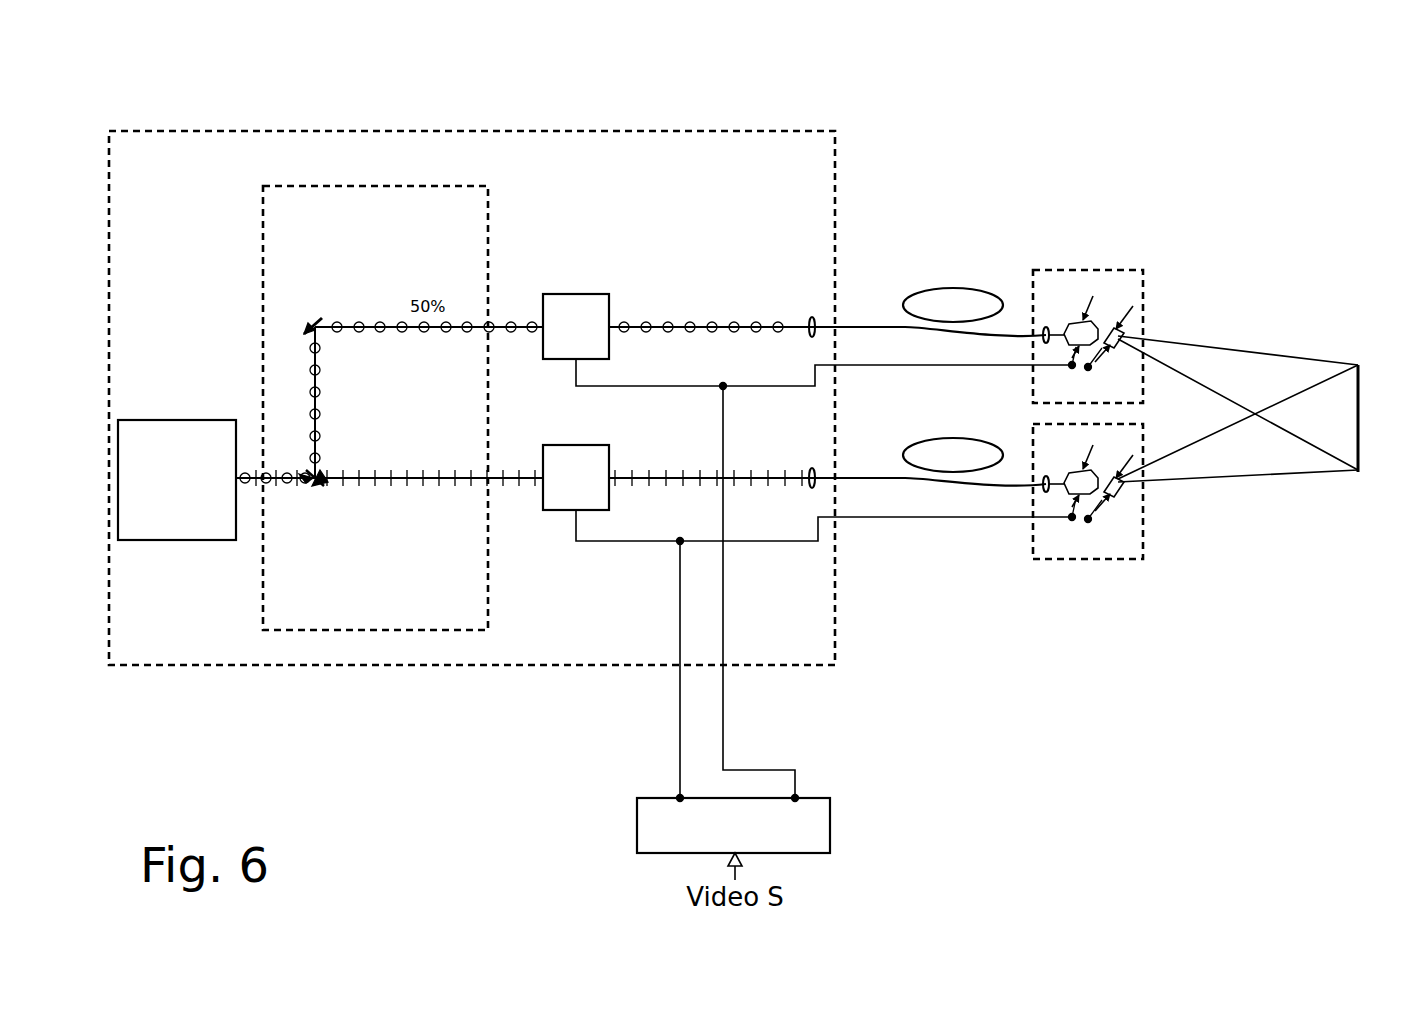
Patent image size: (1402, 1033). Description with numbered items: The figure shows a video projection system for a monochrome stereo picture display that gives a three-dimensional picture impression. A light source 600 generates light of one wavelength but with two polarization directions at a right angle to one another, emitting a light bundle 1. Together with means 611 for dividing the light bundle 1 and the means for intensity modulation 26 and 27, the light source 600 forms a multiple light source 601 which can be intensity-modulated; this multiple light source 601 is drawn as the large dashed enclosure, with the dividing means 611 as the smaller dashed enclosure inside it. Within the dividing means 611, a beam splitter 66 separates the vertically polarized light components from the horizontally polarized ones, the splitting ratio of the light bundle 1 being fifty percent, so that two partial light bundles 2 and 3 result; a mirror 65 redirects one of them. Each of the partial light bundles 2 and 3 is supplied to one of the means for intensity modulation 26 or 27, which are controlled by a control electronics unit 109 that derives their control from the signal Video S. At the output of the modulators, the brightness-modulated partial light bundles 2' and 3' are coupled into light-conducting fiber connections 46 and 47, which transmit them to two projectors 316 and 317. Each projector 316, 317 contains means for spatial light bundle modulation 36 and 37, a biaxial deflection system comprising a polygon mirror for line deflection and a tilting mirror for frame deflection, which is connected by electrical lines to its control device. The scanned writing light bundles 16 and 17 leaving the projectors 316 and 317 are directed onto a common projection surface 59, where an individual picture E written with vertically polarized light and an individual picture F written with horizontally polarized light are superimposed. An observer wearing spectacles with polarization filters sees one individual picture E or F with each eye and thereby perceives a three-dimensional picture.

The light source 600 is at (177, 480).
The multiple light source 601 is at (810, 131).
The means for dividing the light bundle 611 is at (472, 186).
The light bundle 1 is at (280, 484).
The partial light bundle 2 is at (429, 493).
The partial light bundle 3 is at (298, 402).
The deflecting mirror 65 is at (318, 322).
The beam splitter 66 is at (316, 486).
The means for intensity modulation 26 is at (551, 361).
The means for intensity modulation 27 is at (551, 512).
The partial light bundle 3' is at (712, 299).
The partial light bundle 2' is at (712, 451).
The light-conducting fiber connection 46 is at (960, 290).
The light-conducting fiber connection 47 is at (960, 440).
The projector 316 is at (1143, 286).
The projector 317 is at (1143, 448).
The means for spatial light bundle modulation 36 is at (1140, 318).
The means for spatial light bundle modulation 37 is at (1138, 500).
The first projection beam 16 is at (1235, 348).
The second projection beam 17 is at (1265, 480).
The projection surface 59 is at (1356, 364).
The individual picture E is at (1374, 396).
The individual picture F is at (1373, 438).
The control electronics unit 109 is at (733, 825).